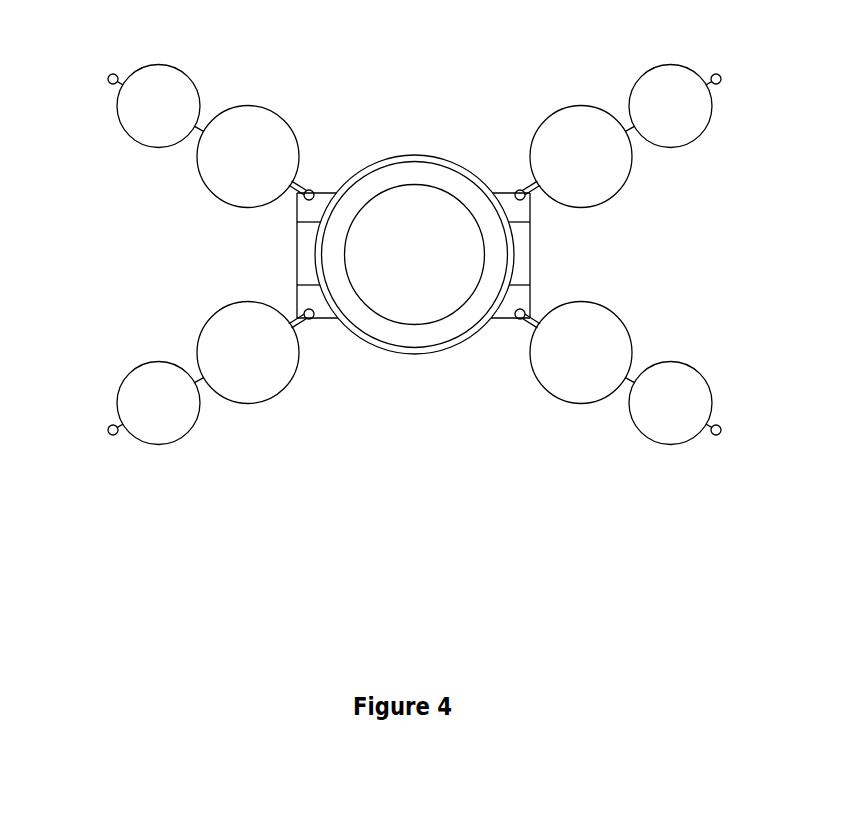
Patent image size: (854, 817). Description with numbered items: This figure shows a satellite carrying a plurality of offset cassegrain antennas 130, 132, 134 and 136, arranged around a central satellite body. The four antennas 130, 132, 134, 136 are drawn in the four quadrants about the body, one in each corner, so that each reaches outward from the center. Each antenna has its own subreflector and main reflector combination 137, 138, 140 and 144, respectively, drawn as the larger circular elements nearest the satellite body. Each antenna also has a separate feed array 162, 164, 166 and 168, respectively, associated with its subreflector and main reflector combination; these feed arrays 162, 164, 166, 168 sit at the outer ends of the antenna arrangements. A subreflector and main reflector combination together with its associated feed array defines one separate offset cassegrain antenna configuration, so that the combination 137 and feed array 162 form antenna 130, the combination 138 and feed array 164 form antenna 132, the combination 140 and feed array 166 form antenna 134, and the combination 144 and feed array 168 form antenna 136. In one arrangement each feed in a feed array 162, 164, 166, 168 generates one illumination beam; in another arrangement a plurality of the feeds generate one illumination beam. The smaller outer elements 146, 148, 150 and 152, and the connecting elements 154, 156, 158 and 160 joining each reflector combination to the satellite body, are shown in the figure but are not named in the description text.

The offset cassegrain antenna 130 is at (270, 62).
The offset cassegrain antenna 132 is at (612, 62).
The offset cassegrain antenna 134 is at (612, 484).
The offset cassegrain antenna 136 is at (272, 482).
The subreflector and main reflector combination 137 is at (187, 183).
The subreflector and main reflector combination 138 is at (687, 187).
The subreflector and main reflector combination 140 is at (687, 356).
The subreflector and main reflector combination 144 is at (185, 353).
The first small roller 146 is at (133, 69).
The second small roller 148 is at (695, 70).
The third small roller 150 is at (692, 438).
The fourth small roller 152 is at (133, 438).
The first pivot link 154 is at (215, 197).
The second pivot link 156 is at (617, 192).
The third pivot link 158 is at (622, 323).
The fourth pivot link 160 is at (216, 313).
The feed array 162 is at (108, 79).
The feed array 164 is at (721, 79).
The feed array 166 is at (721, 431).
The feed array 168 is at (108, 430).